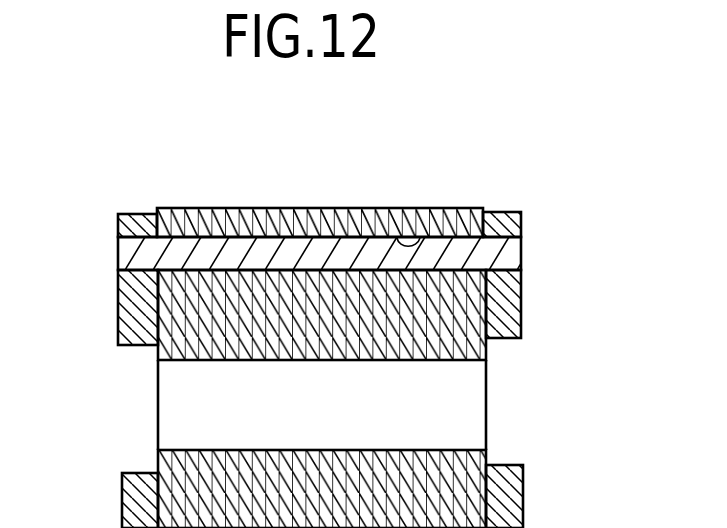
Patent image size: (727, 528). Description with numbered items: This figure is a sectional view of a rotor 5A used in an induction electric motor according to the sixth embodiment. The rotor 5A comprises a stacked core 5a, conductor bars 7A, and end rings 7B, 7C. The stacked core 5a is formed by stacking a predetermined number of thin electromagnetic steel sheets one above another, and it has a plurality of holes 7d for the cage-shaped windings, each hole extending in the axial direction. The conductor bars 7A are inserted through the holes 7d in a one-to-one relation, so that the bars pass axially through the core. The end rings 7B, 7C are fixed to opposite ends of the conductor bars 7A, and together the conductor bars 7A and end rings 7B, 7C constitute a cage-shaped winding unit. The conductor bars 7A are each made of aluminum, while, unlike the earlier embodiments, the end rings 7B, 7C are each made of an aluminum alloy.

The rotor 5A is at (335, 207).
The stacked core 5a is at (440, 360).
The conductor bars 7A is at (521, 245).
The end ring 7B is at (127, 307).
The end ring 7C is at (515, 317).
The holes 7d is at (416, 237).